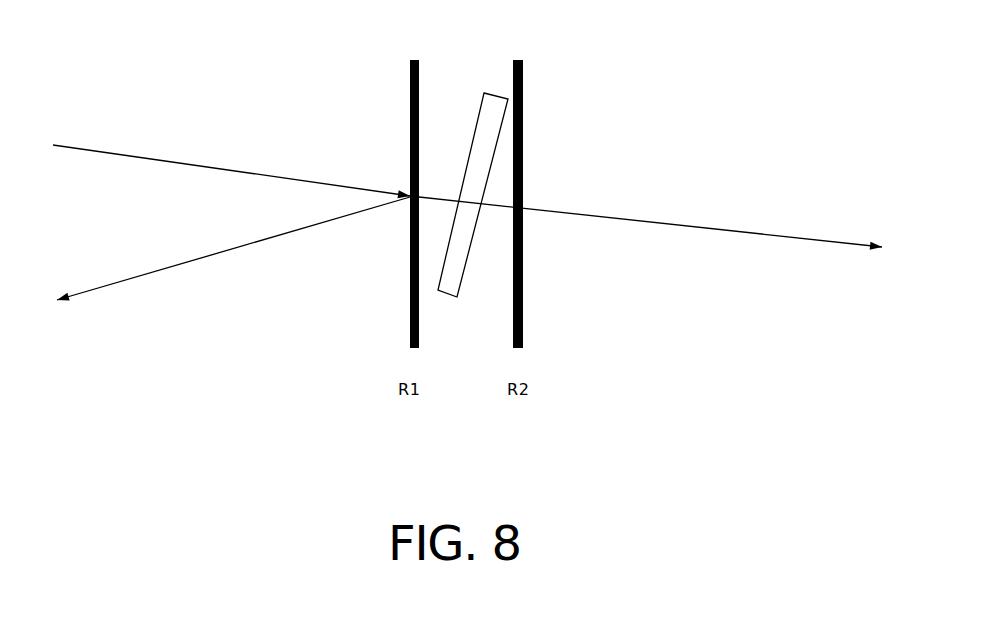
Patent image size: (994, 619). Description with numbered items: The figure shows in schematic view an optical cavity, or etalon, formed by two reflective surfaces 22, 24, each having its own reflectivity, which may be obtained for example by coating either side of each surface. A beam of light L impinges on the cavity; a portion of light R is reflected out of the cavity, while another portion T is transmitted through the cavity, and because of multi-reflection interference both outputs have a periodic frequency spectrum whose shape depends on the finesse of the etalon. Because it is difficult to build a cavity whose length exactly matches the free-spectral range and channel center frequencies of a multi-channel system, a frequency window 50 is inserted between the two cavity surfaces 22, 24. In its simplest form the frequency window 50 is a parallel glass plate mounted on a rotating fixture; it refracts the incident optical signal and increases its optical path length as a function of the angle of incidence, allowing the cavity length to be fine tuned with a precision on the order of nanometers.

The reflective surface 22 is at (413, 127).
The reflective surface 24 is at (522, 97).
The frequency window 50 is at (477, 122).
The beam of light L is at (230, 165).
The transmitted portion of light T is at (748, 230).
The reflected portion of light R is at (240, 240).